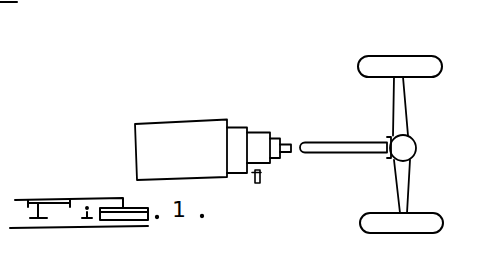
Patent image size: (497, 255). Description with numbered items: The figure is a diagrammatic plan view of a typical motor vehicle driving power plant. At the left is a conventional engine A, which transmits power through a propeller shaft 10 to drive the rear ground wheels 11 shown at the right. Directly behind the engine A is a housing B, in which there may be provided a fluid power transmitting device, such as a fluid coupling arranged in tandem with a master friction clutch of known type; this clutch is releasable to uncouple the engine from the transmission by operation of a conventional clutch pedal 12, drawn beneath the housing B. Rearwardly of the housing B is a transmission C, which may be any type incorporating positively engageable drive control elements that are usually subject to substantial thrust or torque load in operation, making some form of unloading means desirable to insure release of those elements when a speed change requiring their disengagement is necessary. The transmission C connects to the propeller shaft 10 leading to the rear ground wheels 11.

The engine A is at (148, 124).
The housing B is at (244, 128).
The transmission C is at (262, 132).
The propeller shaft 10 is at (365, 120).
The rear ground wheels 11 is at (421, 63).
The clutch pedal 12 is at (262, 178).